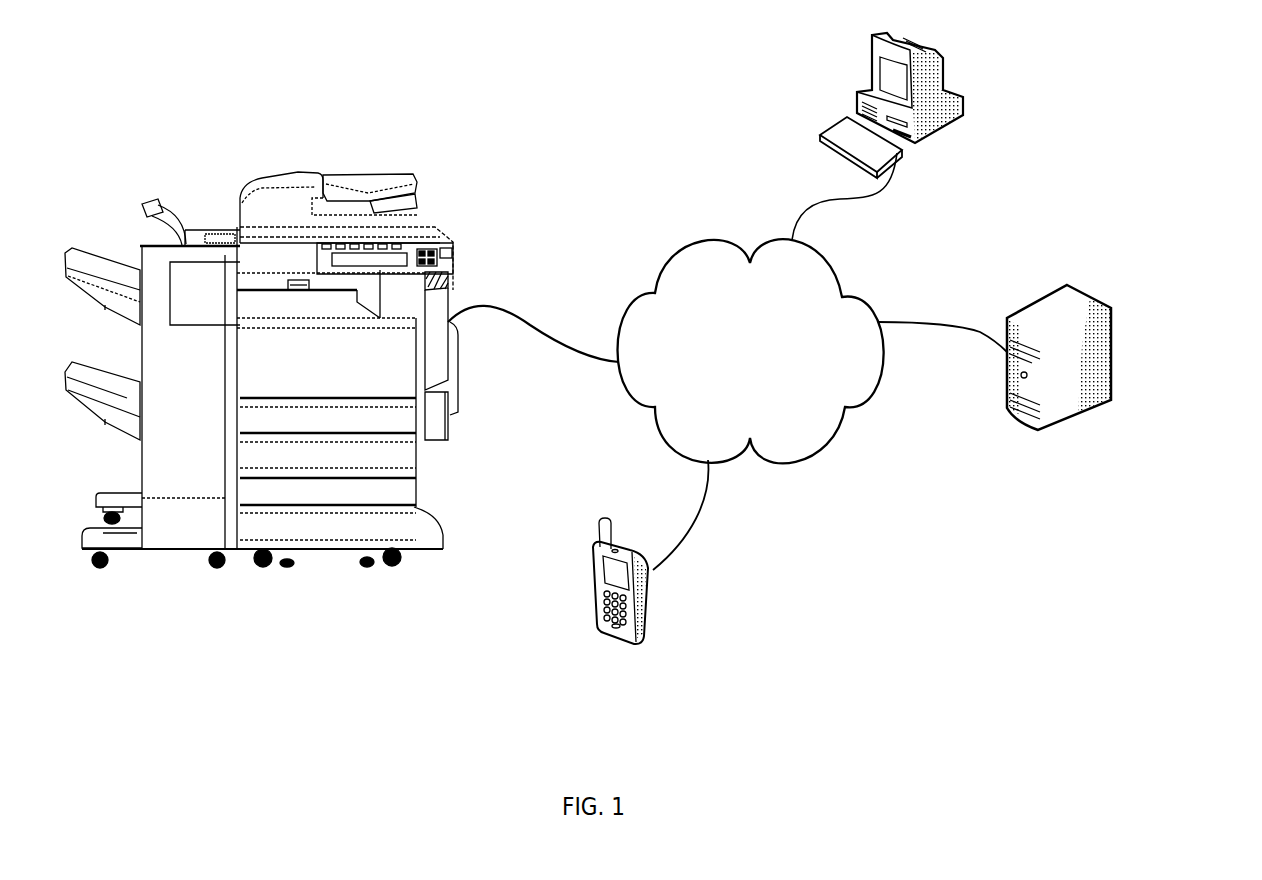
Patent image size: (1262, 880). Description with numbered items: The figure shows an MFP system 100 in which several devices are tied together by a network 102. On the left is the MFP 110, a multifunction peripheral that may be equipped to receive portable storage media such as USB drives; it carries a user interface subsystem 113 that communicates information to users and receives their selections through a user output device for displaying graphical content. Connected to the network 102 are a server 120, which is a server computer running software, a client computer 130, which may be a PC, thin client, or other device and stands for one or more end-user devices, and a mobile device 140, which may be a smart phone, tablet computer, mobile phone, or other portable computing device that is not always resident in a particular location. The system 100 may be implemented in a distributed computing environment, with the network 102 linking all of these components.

The MFP system 100 is at (678, 110).
The network 102 is at (751, 351).
The MFP 110 is at (352, 178).
The user interface subsystem 113 is at (395, 257).
The server 120 is at (1109, 348).
The client computer 130 is at (967, 103).
The mobile device 140 is at (653, 603).